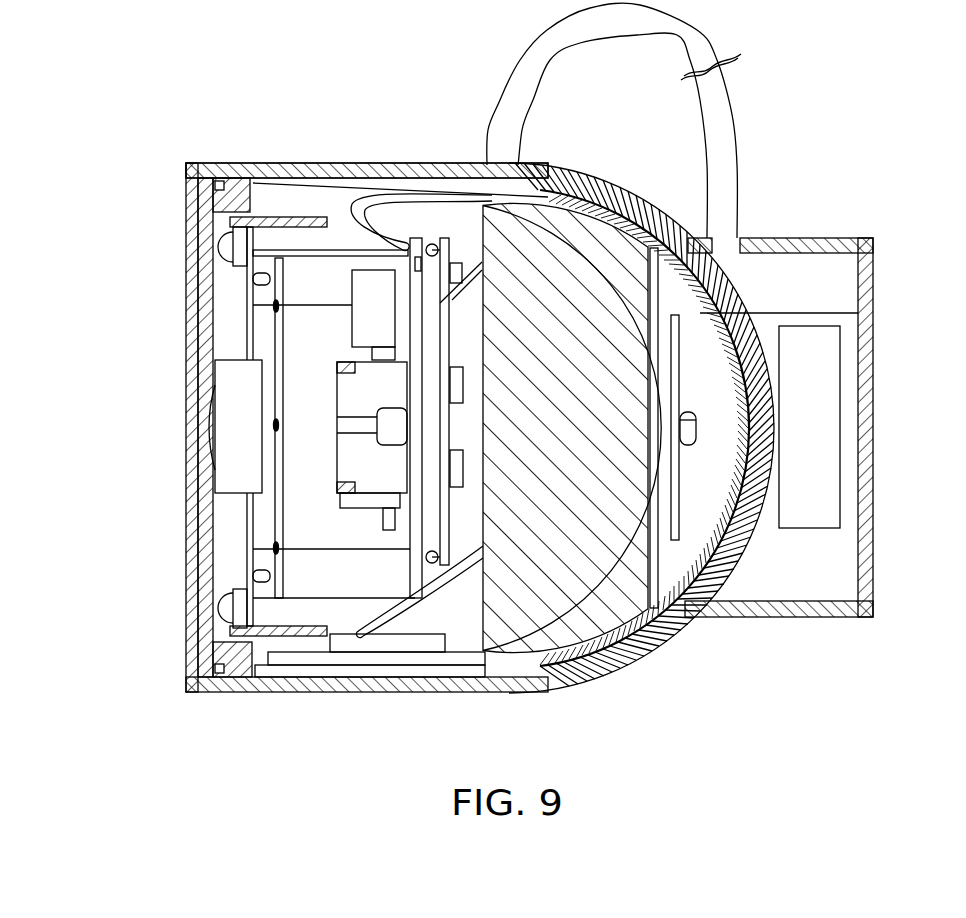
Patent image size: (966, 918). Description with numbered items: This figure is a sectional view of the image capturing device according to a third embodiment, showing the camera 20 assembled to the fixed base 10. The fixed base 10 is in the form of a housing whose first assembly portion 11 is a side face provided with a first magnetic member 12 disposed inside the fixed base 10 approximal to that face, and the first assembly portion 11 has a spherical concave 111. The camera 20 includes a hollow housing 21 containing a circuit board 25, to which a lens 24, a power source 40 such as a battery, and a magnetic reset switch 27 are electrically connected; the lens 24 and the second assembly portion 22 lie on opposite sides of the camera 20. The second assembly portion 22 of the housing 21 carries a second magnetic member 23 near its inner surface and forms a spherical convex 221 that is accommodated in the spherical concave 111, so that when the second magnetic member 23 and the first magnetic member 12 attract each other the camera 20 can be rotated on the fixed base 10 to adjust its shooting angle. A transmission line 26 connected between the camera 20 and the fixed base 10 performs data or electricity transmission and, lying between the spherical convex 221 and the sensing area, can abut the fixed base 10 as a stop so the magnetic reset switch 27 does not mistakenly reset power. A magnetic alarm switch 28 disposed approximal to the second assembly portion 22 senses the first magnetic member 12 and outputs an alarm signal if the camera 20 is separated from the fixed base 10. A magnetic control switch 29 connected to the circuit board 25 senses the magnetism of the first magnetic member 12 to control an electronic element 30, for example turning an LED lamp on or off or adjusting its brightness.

The fixed base 10 is at (866, 482).
The first assembly portion 11 is at (768, 345).
The spherical concave 111 is at (720, 290).
The first magnetic member 12 is at (812, 445).
The camera 20 is at (158, 176).
The housing 21 is at (322, 170).
The second assembly portion 22 is at (708, 584).
The spherical convex 221 is at (670, 600).
The second magnetic member 23 is at (745, 372).
The lens 24 is at (230, 406).
The circuit board 25 is at (447, 238).
The transmission line 26 is at (728, 120).
The magnetic reset switch 27 is at (412, 238).
The magnetic alarm switch 28 is at (696, 420).
The magnetic control switch 29 is at (432, 564).
The electronic element 30 is at (225, 247).
The power source 40 is at (372, 327).